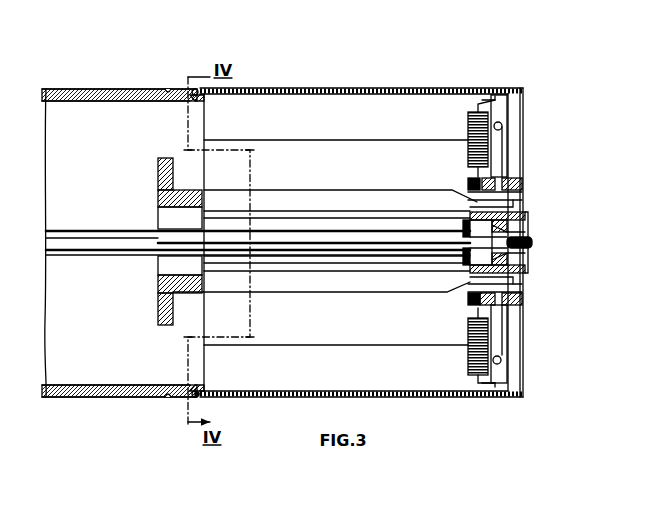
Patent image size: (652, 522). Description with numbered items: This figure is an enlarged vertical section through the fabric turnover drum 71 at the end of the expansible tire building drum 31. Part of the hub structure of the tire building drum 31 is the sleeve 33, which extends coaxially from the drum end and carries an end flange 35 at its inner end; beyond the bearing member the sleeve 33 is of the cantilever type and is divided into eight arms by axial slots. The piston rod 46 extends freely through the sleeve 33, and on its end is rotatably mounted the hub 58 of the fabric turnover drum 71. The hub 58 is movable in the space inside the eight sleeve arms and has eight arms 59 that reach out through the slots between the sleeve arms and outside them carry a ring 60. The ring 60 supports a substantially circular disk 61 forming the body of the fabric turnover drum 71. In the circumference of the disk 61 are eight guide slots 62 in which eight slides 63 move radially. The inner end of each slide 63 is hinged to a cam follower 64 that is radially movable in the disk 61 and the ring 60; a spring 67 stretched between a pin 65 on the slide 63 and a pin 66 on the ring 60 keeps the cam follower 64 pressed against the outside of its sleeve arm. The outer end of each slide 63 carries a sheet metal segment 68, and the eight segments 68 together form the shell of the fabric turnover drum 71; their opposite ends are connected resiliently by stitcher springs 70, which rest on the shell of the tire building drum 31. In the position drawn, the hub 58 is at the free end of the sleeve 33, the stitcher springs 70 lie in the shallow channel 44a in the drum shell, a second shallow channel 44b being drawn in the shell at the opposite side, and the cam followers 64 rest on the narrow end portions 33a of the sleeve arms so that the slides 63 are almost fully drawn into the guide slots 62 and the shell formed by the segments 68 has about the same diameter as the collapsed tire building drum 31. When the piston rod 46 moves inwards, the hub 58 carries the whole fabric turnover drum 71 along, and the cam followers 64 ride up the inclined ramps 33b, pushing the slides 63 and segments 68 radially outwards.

The expansible tire building drum 31 is at (111, 88).
The sleeve 33 is at (328, 200).
The narrow end portions 33a is at (525, 196).
The inclined portions or ramps 33b is at (460, 292).
The end flange 35 is at (165, 157).
The shallow channel 44a is at (183, 396).
The ball detent groove 44b is at (169, 88).
The piston rod 46 is at (112, 238).
The hub 58 is at (526, 273).
The arms 59 is at (528, 203).
The ring 60 is at (522, 184).
The circular disk 61 is at (508, 158).
The guide slots 62 is at (508, 128).
The slides 63 is at (505, 102).
The cam follower 64 is at (508, 318).
The pin 65 is at (493, 108).
The pin 66 is at (468, 184).
The spring 67 is at (468, 126).
The sheet metal segment 68 is at (333, 89).
The stitcher springs 70 is at (199, 396).
The fabric turnover drum 71 is at (278, 86).